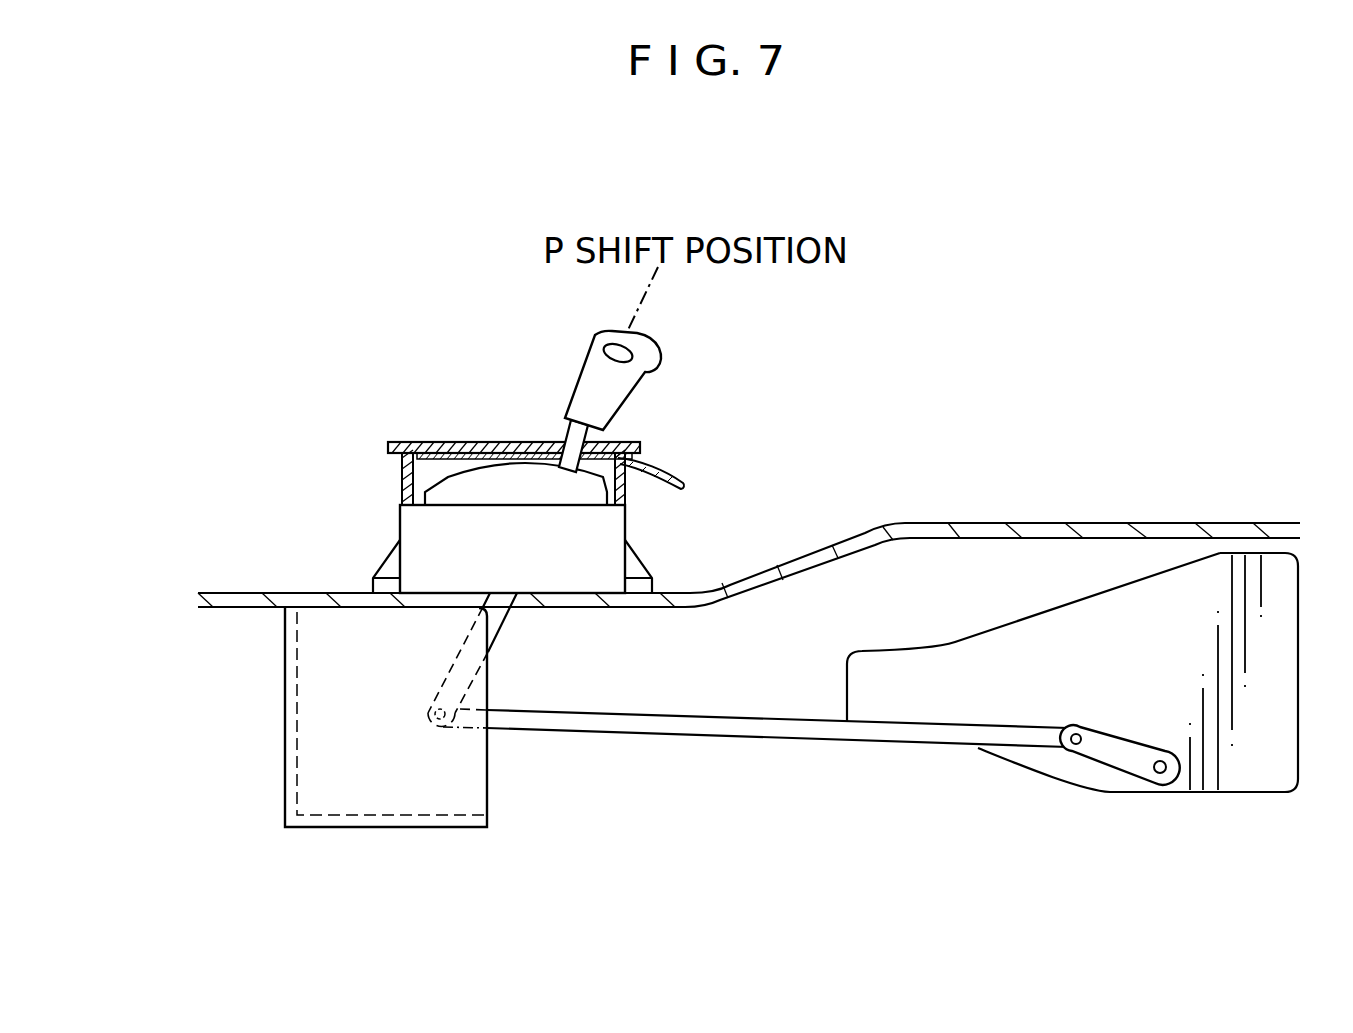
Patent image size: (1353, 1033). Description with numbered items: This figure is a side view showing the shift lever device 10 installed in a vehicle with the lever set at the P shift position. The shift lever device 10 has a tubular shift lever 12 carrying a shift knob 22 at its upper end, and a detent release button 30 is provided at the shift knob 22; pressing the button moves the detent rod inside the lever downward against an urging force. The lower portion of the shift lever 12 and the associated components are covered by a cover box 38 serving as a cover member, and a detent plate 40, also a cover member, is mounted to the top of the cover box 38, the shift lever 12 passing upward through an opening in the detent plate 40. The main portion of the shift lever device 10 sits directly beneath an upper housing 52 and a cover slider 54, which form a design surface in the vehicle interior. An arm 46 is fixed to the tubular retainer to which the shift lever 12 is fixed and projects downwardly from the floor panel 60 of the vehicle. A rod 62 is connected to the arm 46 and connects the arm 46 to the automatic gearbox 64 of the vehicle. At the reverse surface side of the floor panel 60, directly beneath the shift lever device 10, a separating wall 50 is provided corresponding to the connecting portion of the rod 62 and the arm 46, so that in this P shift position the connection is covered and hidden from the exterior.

The shift lever device 10 is at (440, 400).
The shift lever 12 is at (563, 445).
The shift knob 22 is at (660, 352).
The detent release button 30 is at (615, 345).
The cover box 38 is at (628, 518).
The detent plate 40 is at (468, 472).
The arm 46 is at (503, 623).
The separating wall 50 is at (371, 805).
The upper housing 52 is at (640, 443).
The cover slider 54 is at (665, 463).
The floor panel 60 is at (856, 541).
The rod 62 is at (660, 733).
The automatic gearbox 64 is at (1046, 772).